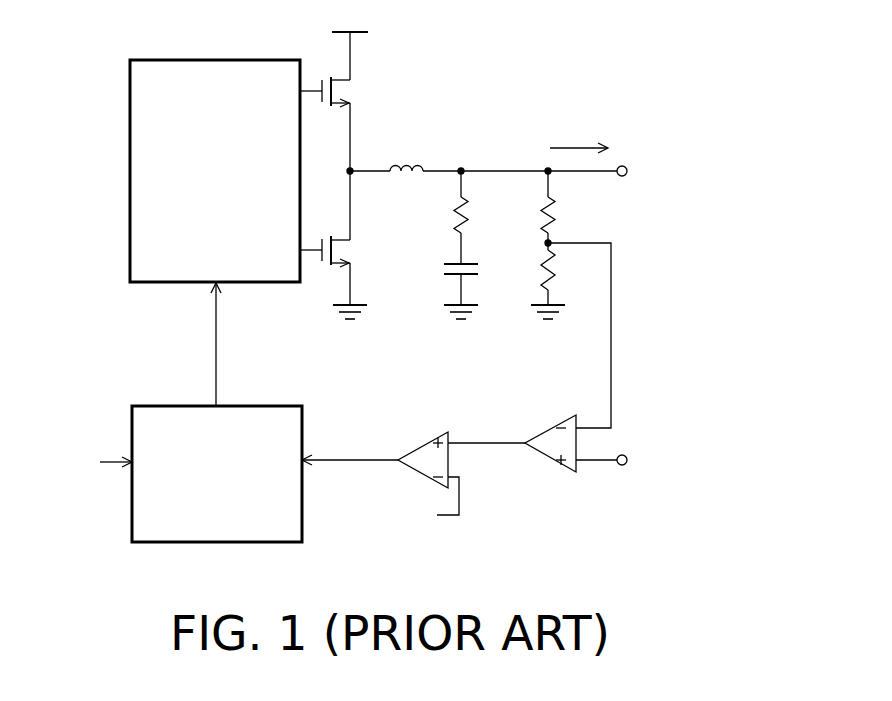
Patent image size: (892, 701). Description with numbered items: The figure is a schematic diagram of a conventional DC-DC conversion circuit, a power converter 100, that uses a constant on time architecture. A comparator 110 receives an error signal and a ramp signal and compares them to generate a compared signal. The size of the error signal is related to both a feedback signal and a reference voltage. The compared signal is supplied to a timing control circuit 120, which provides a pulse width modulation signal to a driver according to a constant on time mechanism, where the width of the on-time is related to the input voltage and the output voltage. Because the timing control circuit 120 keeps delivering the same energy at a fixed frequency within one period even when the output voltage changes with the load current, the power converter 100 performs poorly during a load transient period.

The power converter 100 is at (779, 579).
The comparator 110 is at (417, 443).
The timing control circuit 120 is at (283, 406).